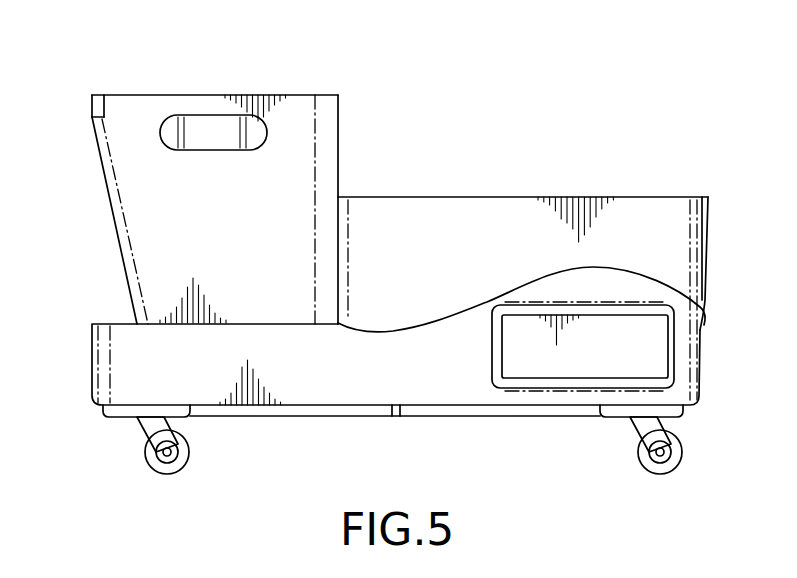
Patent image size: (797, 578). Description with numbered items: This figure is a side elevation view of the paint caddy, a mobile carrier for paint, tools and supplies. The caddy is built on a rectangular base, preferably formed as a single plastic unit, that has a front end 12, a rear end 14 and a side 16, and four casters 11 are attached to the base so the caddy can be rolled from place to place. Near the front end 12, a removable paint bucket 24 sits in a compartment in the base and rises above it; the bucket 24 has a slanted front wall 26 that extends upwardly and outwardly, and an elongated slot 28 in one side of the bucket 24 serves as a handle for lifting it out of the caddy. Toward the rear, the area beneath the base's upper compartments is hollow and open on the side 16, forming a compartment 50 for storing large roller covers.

The casters 11 is at (145, 452).
The front end 12 is at (92, 360).
The rear end 14 is at (706, 256).
The side 16 is at (327, 375).
The removable paint bucket 24 is at (123, 95).
The slanted front wall 26 is at (113, 218).
The elongated slot 28 is at (228, 125).
The compartment 50 is at (640, 343).